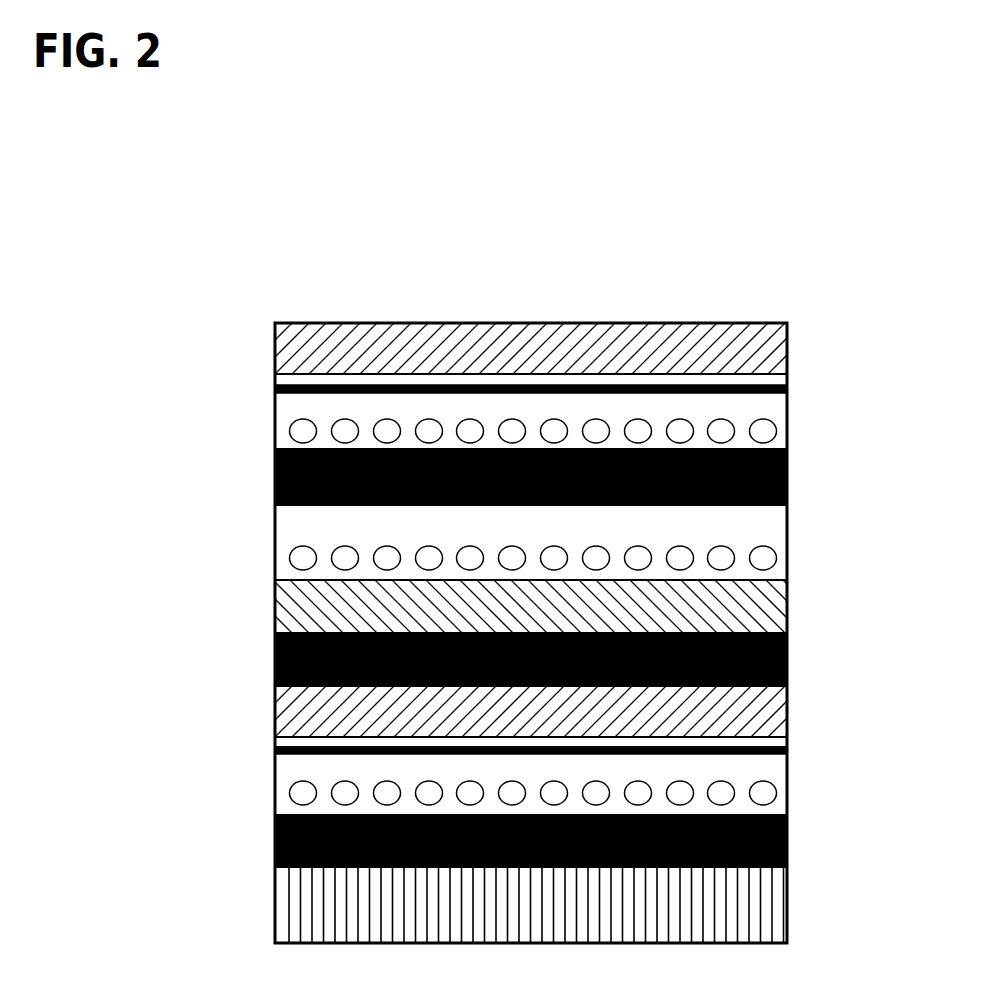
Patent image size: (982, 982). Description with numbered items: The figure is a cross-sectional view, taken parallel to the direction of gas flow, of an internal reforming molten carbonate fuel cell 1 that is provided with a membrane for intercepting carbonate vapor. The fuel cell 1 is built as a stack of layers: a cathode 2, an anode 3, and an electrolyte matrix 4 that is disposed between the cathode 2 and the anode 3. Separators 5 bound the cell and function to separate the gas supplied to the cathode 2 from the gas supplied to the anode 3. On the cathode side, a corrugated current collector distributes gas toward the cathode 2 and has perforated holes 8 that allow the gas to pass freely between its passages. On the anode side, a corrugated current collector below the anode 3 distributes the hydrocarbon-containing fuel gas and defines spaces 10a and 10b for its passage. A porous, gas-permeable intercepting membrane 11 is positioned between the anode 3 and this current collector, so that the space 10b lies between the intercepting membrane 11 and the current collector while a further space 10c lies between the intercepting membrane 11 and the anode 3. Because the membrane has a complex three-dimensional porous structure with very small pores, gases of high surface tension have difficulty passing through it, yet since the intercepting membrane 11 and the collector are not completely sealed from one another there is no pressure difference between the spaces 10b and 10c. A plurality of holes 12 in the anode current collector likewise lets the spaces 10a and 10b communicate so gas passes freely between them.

The fuel cell 1 is at (707, 290).
The cathode 2 is at (775, 606).
The anode 3 is at (763, 351).
The electrolyte matrix 4 is at (787, 652).
The separator 5 is at (787, 474).
The perforated holes 8 is at (770, 556).
The space 10a is at (430, 400).
The space 10b is at (597, 398).
The space 10c is at (660, 377).
The intercepting membrane 11 is at (565, 385).
The holes 12 is at (308, 403).